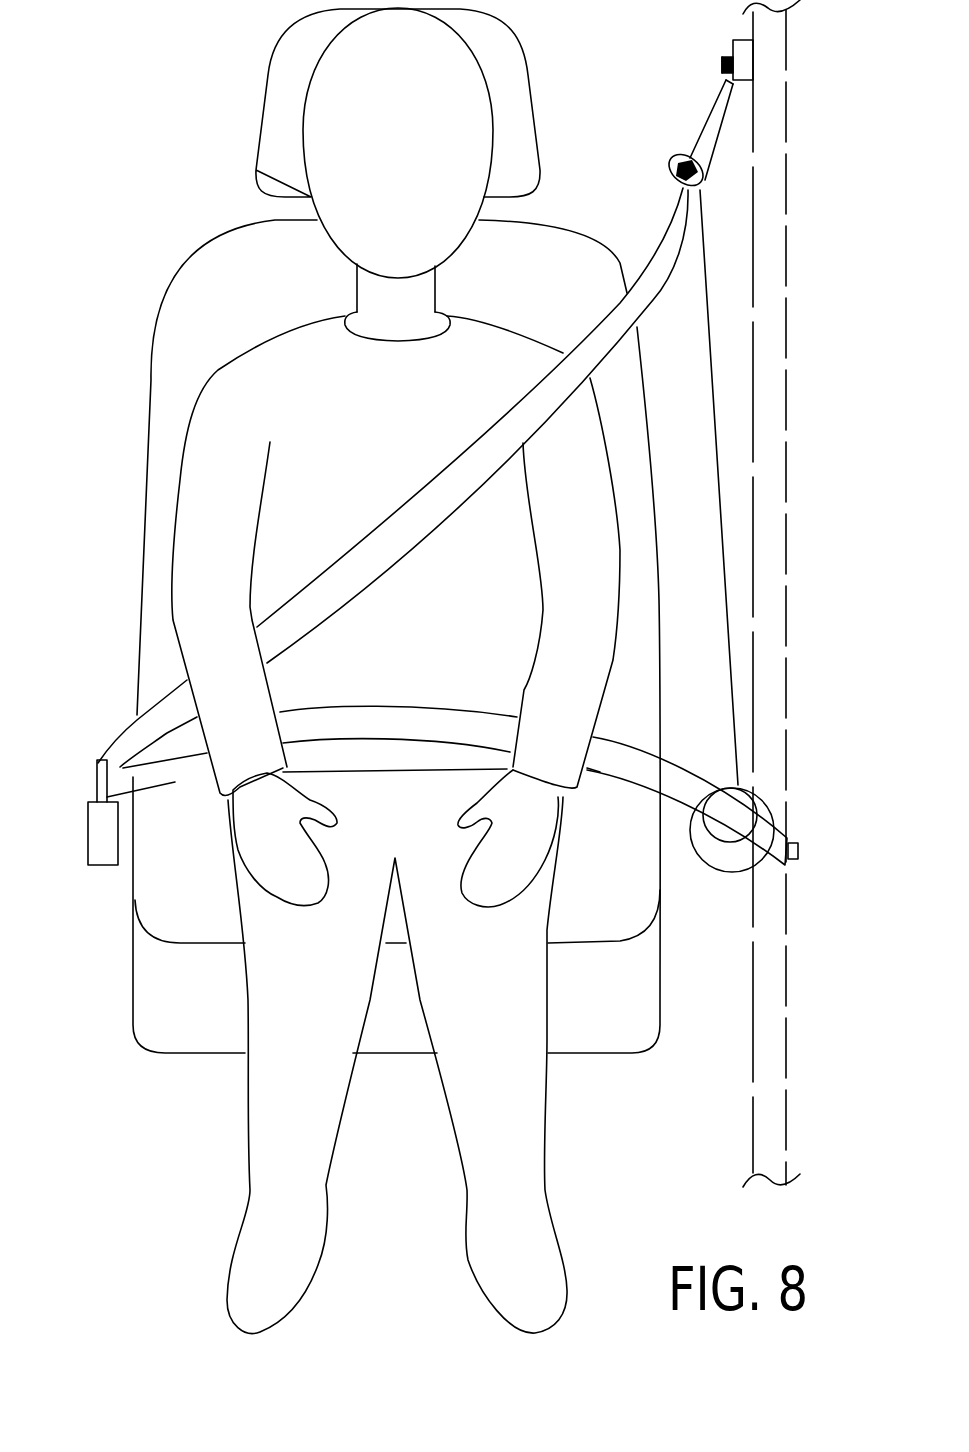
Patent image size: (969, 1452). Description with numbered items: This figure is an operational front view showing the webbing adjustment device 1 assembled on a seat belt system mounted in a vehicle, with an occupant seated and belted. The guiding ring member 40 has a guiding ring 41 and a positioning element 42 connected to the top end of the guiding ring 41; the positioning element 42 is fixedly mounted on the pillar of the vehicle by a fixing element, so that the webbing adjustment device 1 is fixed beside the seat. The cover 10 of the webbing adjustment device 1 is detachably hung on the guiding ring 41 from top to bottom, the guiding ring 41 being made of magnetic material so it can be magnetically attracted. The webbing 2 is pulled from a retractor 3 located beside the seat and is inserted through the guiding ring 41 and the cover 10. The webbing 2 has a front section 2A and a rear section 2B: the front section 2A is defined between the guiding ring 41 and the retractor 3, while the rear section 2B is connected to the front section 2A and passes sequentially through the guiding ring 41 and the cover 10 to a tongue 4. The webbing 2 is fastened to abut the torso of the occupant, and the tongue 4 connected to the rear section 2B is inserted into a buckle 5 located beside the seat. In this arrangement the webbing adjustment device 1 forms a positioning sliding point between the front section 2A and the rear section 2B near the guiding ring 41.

The webbing adjustment device 1 is at (641, 175).
The webbing 2 is at (478, 472).
The front section 2A is at (720, 488).
The rear section 2B is at (465, 480).
The retractor 3 is at (723, 878).
The tongue 4 is at (96, 781).
The buckle 5 is at (104, 850).
The cover 10 is at (664, 153).
The guiding ring member 40 is at (715, 78).
The guiding ring 41 is at (730, 88).
The positioning element 42 is at (731, 57).